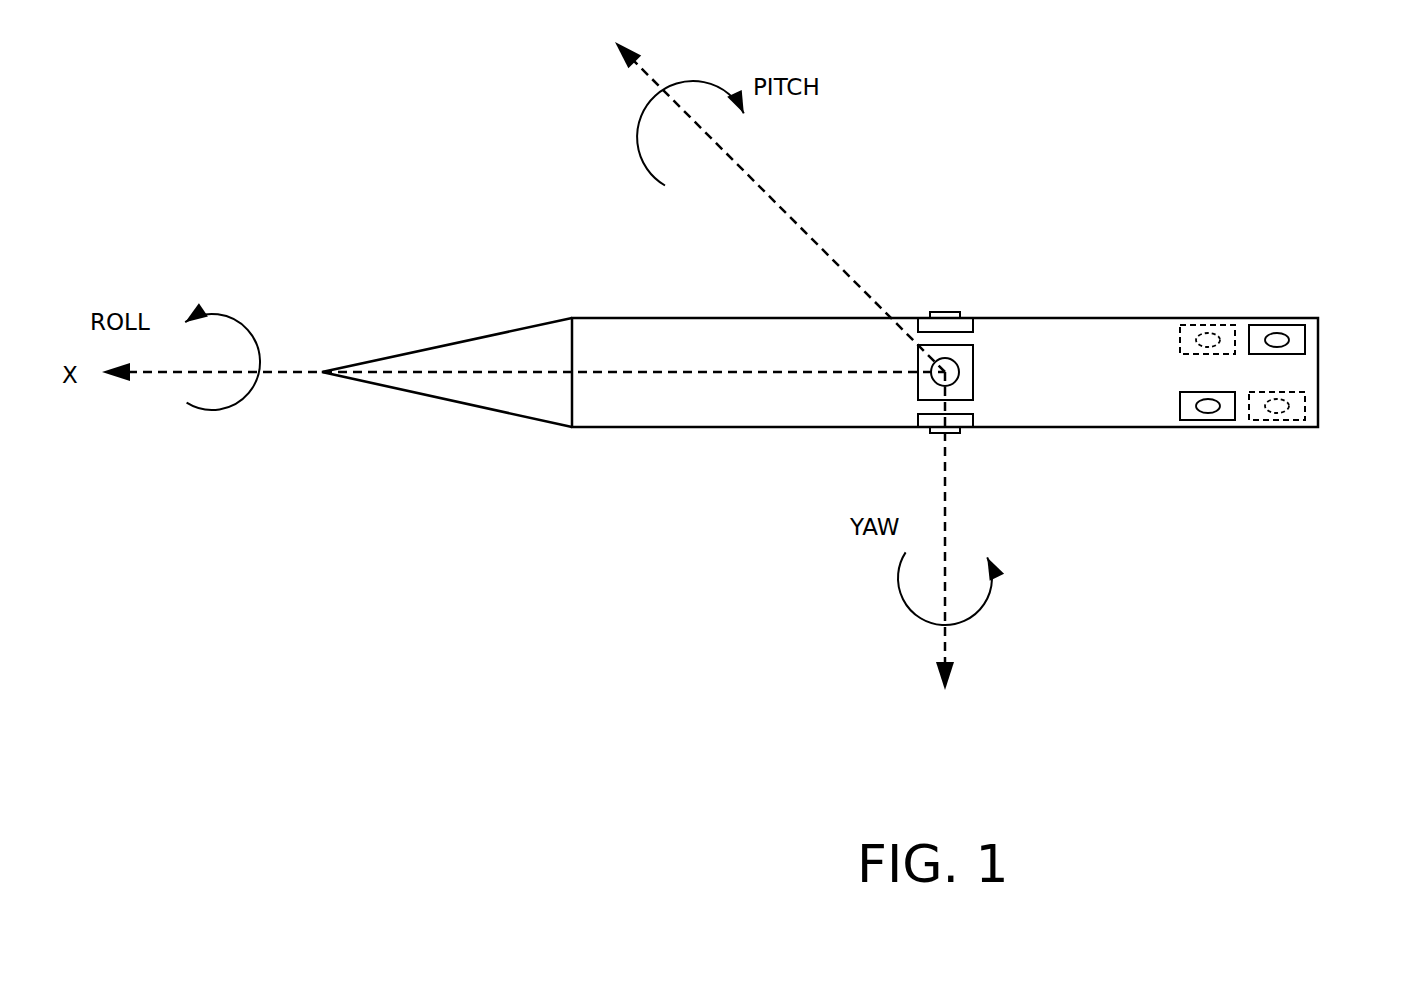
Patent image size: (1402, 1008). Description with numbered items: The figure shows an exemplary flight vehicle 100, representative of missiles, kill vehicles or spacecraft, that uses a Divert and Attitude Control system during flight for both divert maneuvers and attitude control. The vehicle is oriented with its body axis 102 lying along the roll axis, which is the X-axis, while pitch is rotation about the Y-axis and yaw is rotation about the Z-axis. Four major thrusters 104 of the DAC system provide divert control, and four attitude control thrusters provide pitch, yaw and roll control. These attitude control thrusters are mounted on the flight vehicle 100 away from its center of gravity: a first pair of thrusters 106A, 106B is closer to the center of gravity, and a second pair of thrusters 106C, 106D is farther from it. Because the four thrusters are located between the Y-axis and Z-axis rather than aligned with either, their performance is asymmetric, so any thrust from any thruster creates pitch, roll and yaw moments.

The flight vehicle 100 is at (994, 734).
The body axis 102 is at (682, 372).
The major thrusters 104 is at (947, 315).
The attitude control thruster 106A is at (1193, 323).
The attitude control thruster 106B is at (1197, 423).
The attitude control thruster 106C is at (1290, 323).
The attitude control thruster 106D is at (1292, 423).